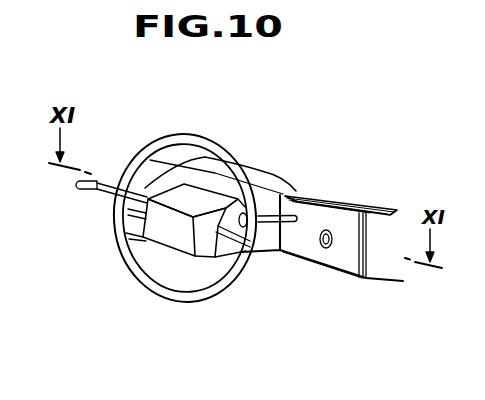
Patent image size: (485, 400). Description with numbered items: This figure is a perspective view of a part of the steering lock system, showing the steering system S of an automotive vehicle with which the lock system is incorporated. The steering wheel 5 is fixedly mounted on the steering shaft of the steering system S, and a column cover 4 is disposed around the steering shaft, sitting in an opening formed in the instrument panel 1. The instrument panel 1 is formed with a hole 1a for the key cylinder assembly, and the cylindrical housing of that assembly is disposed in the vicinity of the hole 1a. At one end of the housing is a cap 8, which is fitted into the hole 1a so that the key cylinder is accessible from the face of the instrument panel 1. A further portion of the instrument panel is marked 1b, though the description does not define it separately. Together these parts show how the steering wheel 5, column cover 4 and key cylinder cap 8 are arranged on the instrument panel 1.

The instrument panel 1 is at (290, 253).
The hole 1a is at (322, 250).
The lower panel portion 1b is at (320, 254).
The column cover 4 is at (227, 174).
The steering wheel 5 is at (218, 298).
The cap 8 is at (327, 249).
The steering system S is at (181, 307).